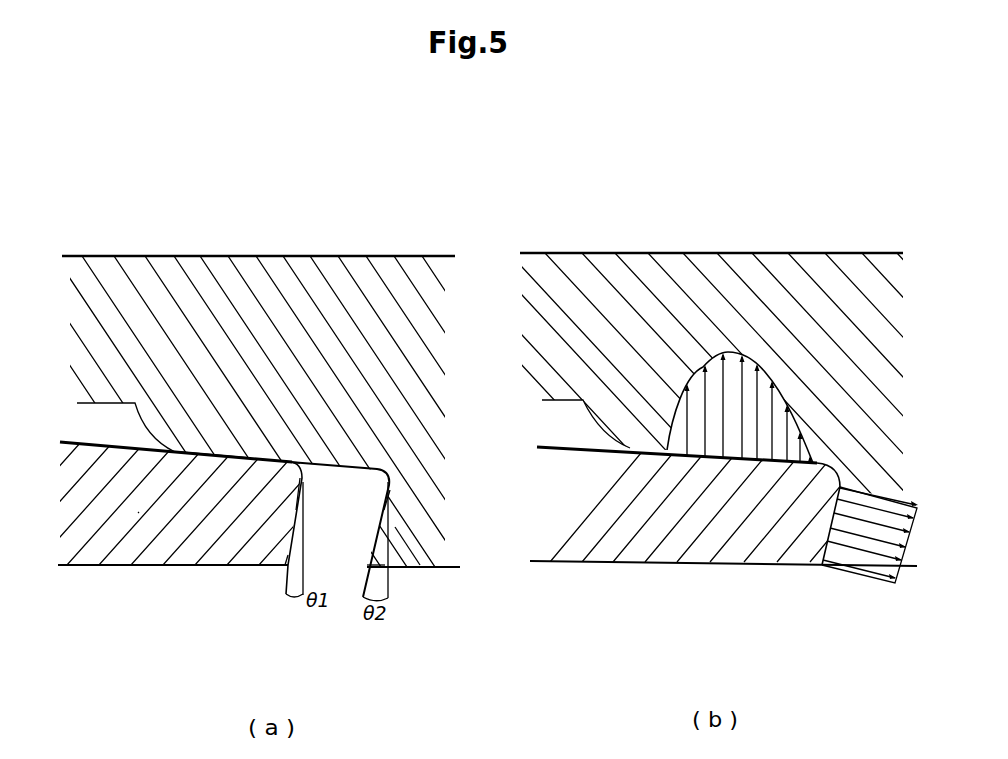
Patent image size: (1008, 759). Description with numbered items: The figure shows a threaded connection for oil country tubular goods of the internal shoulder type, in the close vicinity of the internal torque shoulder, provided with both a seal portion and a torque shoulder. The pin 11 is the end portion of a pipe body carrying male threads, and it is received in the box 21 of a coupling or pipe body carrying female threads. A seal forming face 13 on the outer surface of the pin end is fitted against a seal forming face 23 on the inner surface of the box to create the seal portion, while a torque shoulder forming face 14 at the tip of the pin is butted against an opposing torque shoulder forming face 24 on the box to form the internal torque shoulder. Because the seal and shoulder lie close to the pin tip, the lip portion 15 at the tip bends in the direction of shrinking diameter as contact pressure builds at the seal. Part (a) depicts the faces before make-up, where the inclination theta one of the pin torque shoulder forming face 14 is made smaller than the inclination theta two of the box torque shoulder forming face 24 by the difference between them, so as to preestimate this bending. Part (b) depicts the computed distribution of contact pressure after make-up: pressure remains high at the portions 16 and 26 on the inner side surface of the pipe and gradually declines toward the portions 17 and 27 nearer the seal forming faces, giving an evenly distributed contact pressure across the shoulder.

The pin 11 is at (27, 500).
The seal forming face on the pin 13 is at (196, 463).
The torque shoulder forming face on the pin 14 is at (257, 563).
The lip portion 15 is at (138, 513).
The high contact pressure portion on the pin 16 is at (273, 567).
The seal-forming-face-side portion on the pin 17 is at (295, 482).
The box 21 is at (333, 310).
The seal forming face on the box 23 is at (270, 452).
The torque shoulder forming face on the box 24 is at (395, 527).
The high contact pressure portion on the box 26 is at (375, 563).
The seal-forming-face-side portion on the box 27 is at (394, 493).